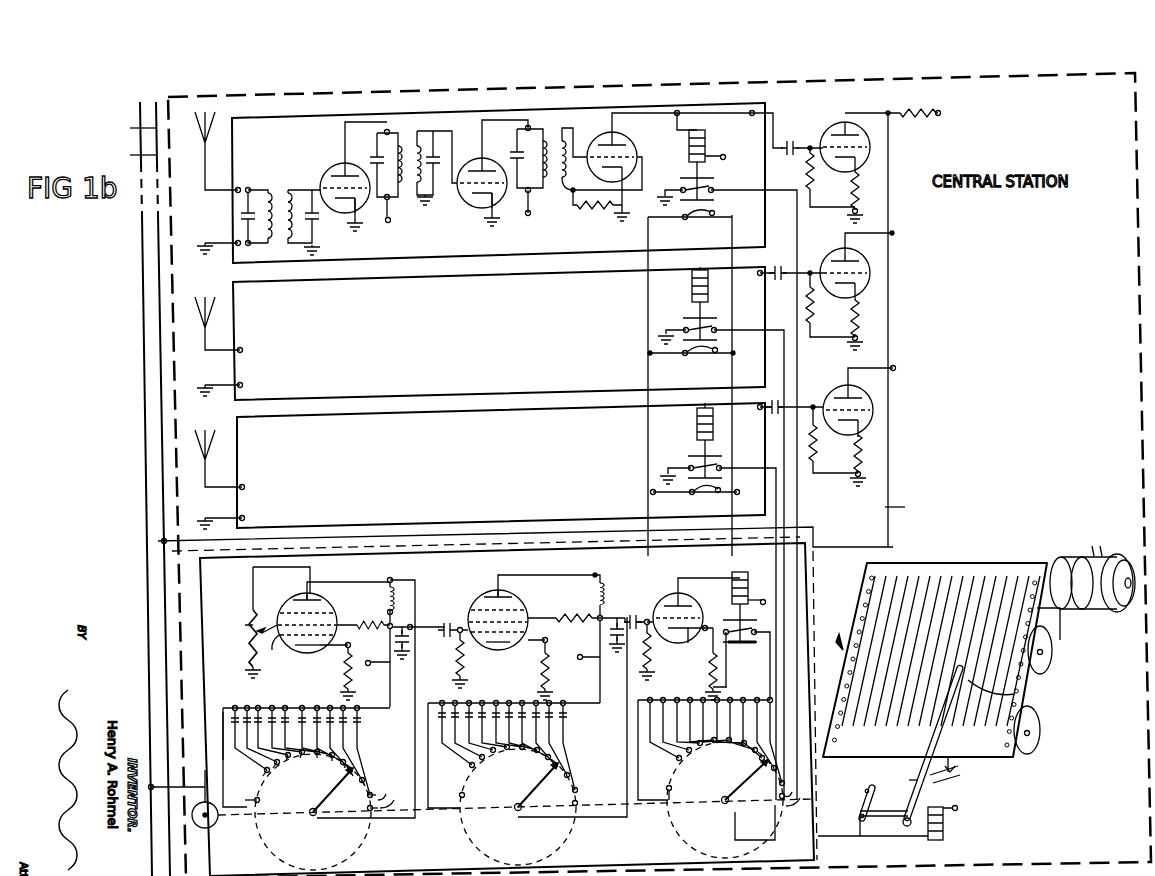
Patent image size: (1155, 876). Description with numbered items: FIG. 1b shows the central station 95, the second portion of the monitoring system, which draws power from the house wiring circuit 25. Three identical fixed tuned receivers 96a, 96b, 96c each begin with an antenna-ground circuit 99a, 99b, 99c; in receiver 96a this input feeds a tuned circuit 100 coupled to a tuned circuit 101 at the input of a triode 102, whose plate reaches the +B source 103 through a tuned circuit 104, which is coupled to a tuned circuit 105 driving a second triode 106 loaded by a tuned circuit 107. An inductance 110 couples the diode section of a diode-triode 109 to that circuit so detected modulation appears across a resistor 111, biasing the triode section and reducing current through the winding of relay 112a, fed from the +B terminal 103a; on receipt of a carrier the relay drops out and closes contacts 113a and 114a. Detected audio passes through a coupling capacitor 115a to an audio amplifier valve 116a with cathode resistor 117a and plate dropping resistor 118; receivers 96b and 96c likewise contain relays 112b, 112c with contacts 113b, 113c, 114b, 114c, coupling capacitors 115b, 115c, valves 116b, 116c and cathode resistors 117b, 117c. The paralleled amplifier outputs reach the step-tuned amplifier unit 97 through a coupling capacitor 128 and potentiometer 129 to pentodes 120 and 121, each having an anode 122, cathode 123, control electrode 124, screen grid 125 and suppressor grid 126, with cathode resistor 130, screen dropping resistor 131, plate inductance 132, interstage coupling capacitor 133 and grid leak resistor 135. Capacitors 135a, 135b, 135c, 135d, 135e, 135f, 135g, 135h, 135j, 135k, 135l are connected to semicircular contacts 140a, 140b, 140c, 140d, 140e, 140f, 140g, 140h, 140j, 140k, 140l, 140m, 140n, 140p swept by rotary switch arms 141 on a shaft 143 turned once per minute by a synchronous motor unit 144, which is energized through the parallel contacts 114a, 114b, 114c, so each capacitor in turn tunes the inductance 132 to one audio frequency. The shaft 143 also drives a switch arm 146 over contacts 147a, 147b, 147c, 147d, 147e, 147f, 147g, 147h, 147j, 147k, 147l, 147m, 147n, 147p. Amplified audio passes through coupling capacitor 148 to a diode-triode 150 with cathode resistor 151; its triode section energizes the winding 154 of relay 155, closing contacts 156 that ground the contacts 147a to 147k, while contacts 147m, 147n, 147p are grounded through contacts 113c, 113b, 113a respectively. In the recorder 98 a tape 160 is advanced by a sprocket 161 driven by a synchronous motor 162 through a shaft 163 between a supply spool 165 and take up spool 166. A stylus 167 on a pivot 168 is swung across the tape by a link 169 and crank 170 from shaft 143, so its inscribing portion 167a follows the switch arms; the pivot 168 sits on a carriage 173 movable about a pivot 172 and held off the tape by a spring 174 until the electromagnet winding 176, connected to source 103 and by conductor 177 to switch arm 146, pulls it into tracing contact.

The house wiring circuit 25 is at (130, 128).
The central station 95 is at (133, 155).
The fixed tuned receiver 96a is at (642, 109).
The fixed tuned receiver 96b is at (499, 333).
The fixed tuned receiver 96c is at (501, 465).
The step-tuned audio frequency amplifier and translating unit 97 is at (814, 545).
The recording unit 98 is at (962, 551).
The antenna-ground circuit 99a is at (218, 198).
The antenna-ground circuit 99b is at (222, 355).
The antenna-ground circuit 99c is at (225, 490).
The tuned circuit 100 is at (261, 190).
The tuned circuit 101 is at (288, 192).
The electron discharge valve 102 is at (332, 170).
The source of +B potential 103 is at (972, 821).
The plate supply terminal 103a is at (725, 158).
The tuned circuit 104 is at (378, 143).
The tuned circuit 105 is at (444, 133).
The triode 106 is at (492, 173).
The tuned circuit 107 is at (518, 142).
The electron discharge valve 109 is at (635, 144).
The inductance 110 is at (572, 201).
The resistor 111 is at (596, 209).
The control relay 112a is at (728, 133).
The control relay 112b is at (694, 276).
The control relay 112c is at (696, 420).
The normally open contacts 113a is at (720, 192).
The normally open contacts 113b is at (684, 328).
The normally open contacts 113c is at (688, 466).
The normally open contacts 114a is at (690, 383).
The normally open contacts 114b is at (691, 361).
The normally open contacts 114c is at (695, 499).
The coupling capacitor 115a is at (793, 141).
The coupling capacitor 115b is at (791, 283).
The coupling capacitor 115c is at (772, 410).
The electron discharge valve 116a is at (834, 123).
The electron discharge valve 116b is at (837, 256).
The electron discharge valve 116c is at (842, 395).
The resistor 117a is at (853, 193).
The resistor 117b is at (851, 314).
The resistor 117c is at (855, 456).
The voltage dropping resistor 118 is at (917, 118).
The electron discharge valve 120 is at (300, 590).
The electron discharge valve 121 is at (488, 591).
The anode 122 is at (290, 601).
The cathode 123 is at (305, 654).
The control electrode 124 is at (272, 651).
The screen grid 125 is at (249, 622).
The suppressor grid 126 is at (345, 615).
The coupling capacitor 128 is at (887, 507).
The potentiometer 129 is at (250, 645).
The resistor 130 is at (347, 664).
The voltage dropping resistor 131 is at (363, 617).
The inductance 132 is at (390, 580).
The coupling capacitor 133 is at (440, 627).
The grid leak resistor 135 is at (458, 647).
The capacitor 135a is at (216, 736).
The capacitor 135b is at (236, 729).
The capacitor 135c is at (248, 729).
The capacitor 135d is at (259, 729).
The capacitor 135e is at (273, 729).
The capacitor 135f is at (286, 729).
The capacitor 135g is at (303, 729).
The capacitor 135h is at (318, 729).
The capacitor 135j is at (331, 729).
The capacitor 135k is at (344, 729).
The capacitor 135l is at (358, 729).
The contact 140a is at (251, 819).
The contact 140b is at (249, 786).
The contact 140c is at (260, 777).
The contact 140d is at (278, 777).
The contact 140e is at (291, 775).
The contact 140f is at (304, 773).
The contact 140g is at (318, 773).
The contact 140h is at (331, 777).
The contact 140j is at (343, 787).
The contact 140k is at (355, 792).
The switch contact 140l is at (365, 768).
The contact 140m is at (372, 772).
The contact 140n is at (385, 777).
The contact 140p is at (394, 790).
The rotary switch arm 141 is at (306, 789).
The shaft 143 is at (776, 806).
The synchronous motor unit 144 is at (208, 828).
The rotary switch arm 146 is at (720, 802).
The contact 147a is at (664, 814).
The contact 147b is at (664, 772).
The contact 147c is at (674, 766).
The contact 147d is at (686, 759).
The contact 147e is at (699, 754).
The contact 147f is at (714, 749).
The contact 147g is at (728, 744).
The contact 147h is at (741, 744).
The contact 147j is at (751, 750).
The contact 147k is at (764, 755).
The switch contact 147l is at (774, 766).
The contact 147m is at (781, 774).
The contact 147n is at (791, 780).
The contact 147p is at (798, 788).
The coupling capacitor 148 is at (637, 619).
The diode-triode 150 is at (672, 584).
The resistor 151 is at (707, 658).
The winding 154 is at (746, 600).
The relay 155 is at (733, 576).
The normally open contacts 156 is at (731, 626).
The record receiving element 160 is at (853, 613).
The sprocket 161 is at (1053, 559).
The synchronous motor 162 is at (1090, 559).
The shaft 163 is at (1067, 613).
The tape supply spool 165 is at (1035, 713).
The take up spool 166 is at (1054, 651).
The stylus 167 is at (927, 746).
The inscribing portion 167a is at (1015, 695).
The pivot 168 is at (909, 780).
The link 169 is at (874, 821).
The crank 170 is at (858, 805).
The pivot 172 is at (948, 766).
The movable carriage 173 is at (960, 782).
The spring 174 is at (960, 770).
The winding 176 is at (928, 841).
The conductor 177 is at (870, 838).